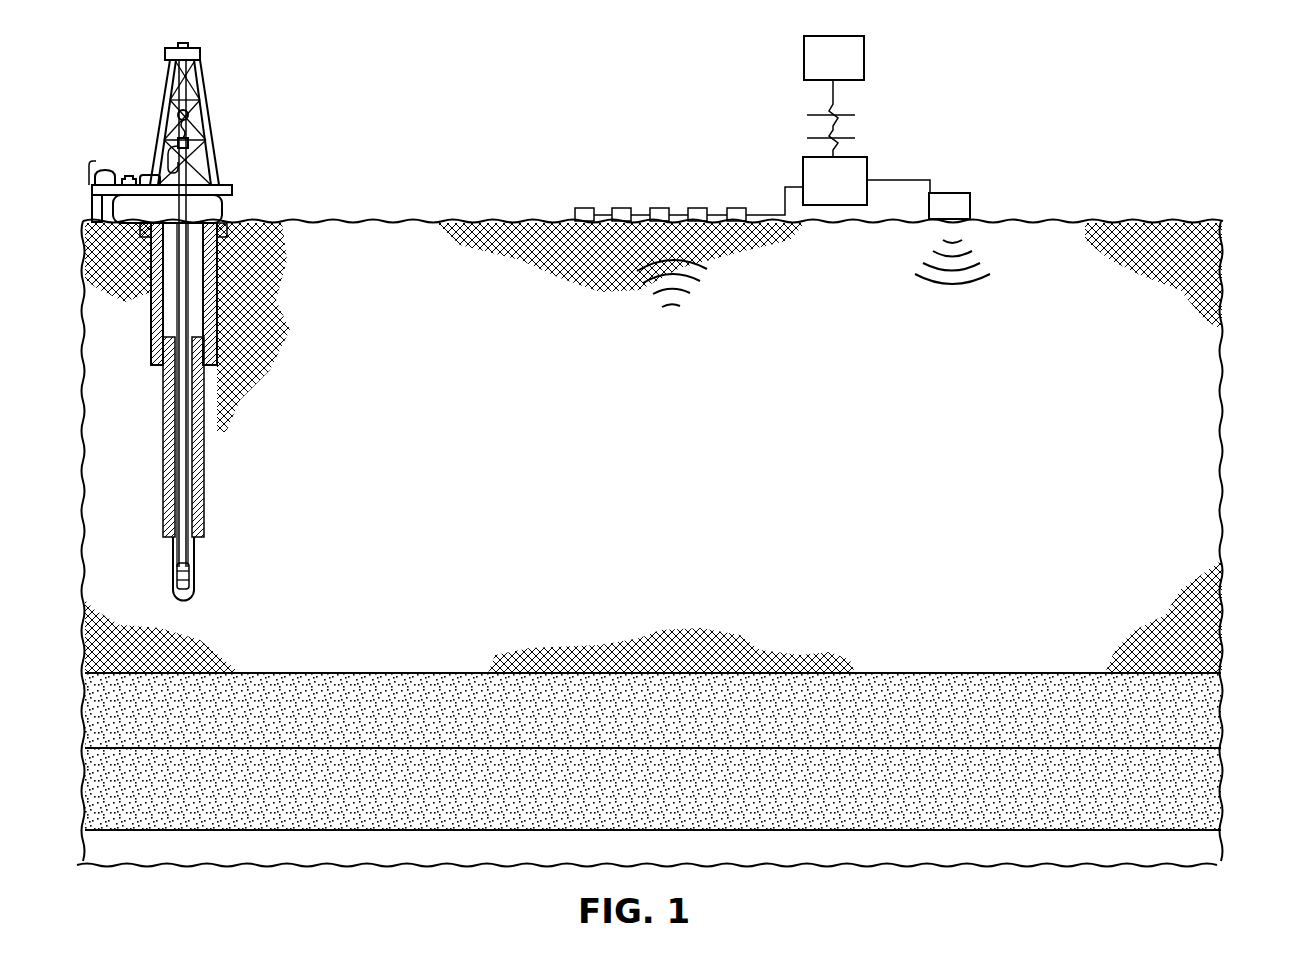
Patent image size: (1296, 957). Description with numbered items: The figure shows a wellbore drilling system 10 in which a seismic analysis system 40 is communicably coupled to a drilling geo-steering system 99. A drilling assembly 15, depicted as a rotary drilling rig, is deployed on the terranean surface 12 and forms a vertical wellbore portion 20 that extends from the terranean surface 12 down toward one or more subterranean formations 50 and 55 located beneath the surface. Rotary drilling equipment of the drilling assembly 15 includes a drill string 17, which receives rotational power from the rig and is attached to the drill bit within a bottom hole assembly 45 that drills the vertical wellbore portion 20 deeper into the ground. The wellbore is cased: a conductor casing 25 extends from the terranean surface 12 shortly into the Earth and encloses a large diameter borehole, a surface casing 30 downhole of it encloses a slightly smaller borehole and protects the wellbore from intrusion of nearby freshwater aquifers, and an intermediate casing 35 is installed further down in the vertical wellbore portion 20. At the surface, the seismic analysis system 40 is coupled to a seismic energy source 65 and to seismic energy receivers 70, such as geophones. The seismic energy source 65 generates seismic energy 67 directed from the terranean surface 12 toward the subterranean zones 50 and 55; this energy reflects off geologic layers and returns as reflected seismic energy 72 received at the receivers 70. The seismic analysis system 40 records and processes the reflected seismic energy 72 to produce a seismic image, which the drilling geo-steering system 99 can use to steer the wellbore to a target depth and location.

The wellbore drilling system 10 is at (1140, 176).
The terranean surface 12 is at (386, 216).
The drilling assembly 15 is at (153, 101).
The drill string 17 is at (188, 447).
The vertical wellbore portion 20 is at (191, 566).
The conductor casing 25 is at (228, 229).
The surface casing 30 is at (150, 295).
The intermediate casing 35 is at (163, 452).
The seismic analysis system 40 is at (806, 157).
The bottom hole assembly 45 is at (176, 581).
The subterranean formation 50 is at (1222, 712).
The subterranean formation 55 is at (1222, 783).
The seismic energy source 65 is at (955, 193).
The seismic energy 67 is at (972, 296).
The seismic energy receivers 70 is at (758, 211).
The reflected seismic energy 72 is at (710, 292).
The drilling geo-steering system 99 is at (818, 36).